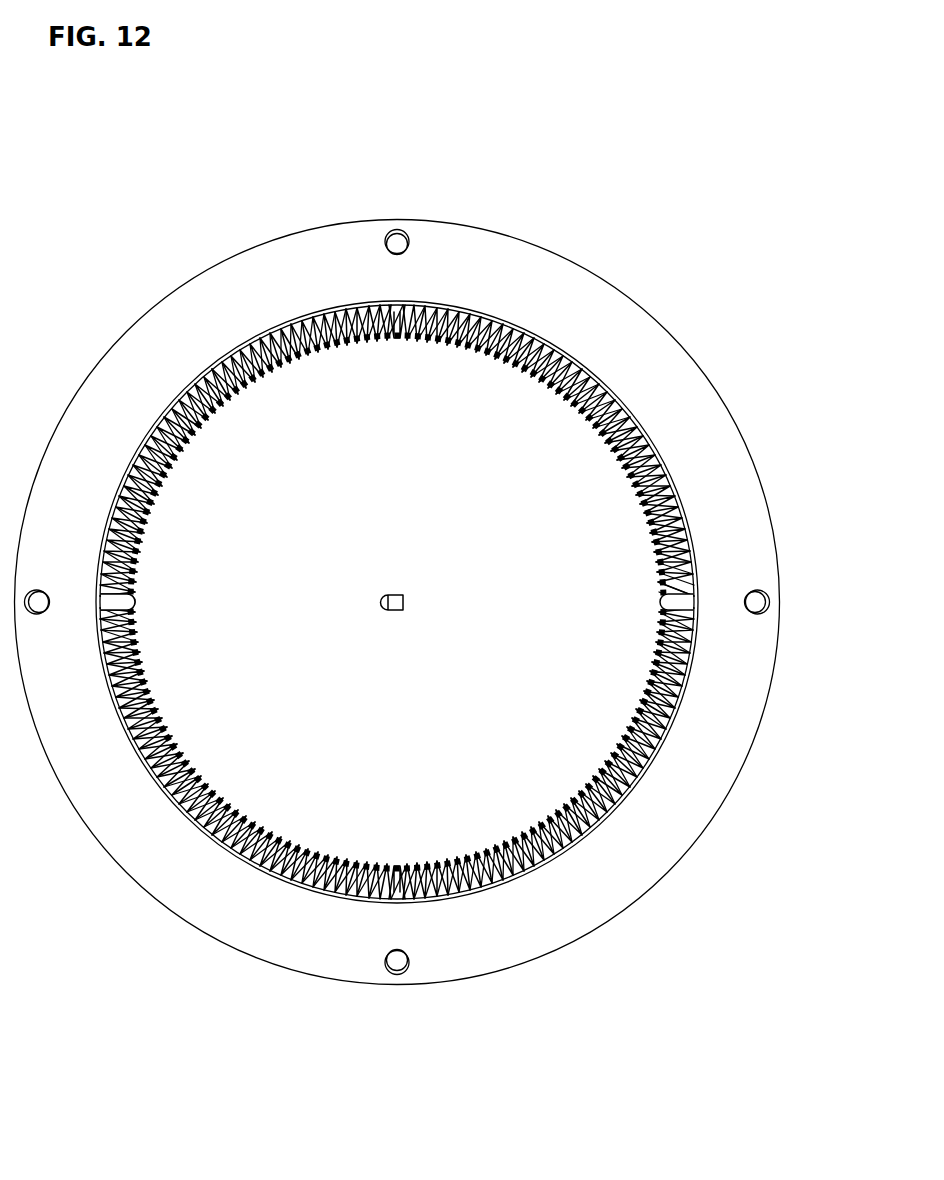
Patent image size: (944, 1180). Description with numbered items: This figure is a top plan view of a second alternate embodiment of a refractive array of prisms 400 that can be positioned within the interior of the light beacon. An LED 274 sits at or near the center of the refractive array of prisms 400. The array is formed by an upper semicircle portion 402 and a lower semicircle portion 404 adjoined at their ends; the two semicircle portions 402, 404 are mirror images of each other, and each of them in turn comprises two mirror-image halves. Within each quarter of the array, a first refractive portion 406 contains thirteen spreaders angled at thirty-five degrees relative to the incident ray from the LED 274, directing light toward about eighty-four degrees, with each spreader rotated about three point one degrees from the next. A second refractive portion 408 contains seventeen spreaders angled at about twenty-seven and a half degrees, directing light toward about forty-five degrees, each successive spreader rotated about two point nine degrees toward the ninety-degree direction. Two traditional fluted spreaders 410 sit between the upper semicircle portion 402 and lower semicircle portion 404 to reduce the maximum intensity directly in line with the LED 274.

The refractive array of prisms 400 is at (602, 219).
The upper semicircle portion 402 is at (700, 563).
The lower semicircle portion 404 is at (702, 628).
The first refractive portion 406 is at (397, 343).
The second refractive portion 408 is at (237, 395).
The fluted spreaders 410 is at (133, 604).
The LED 274 is at (400, 594).